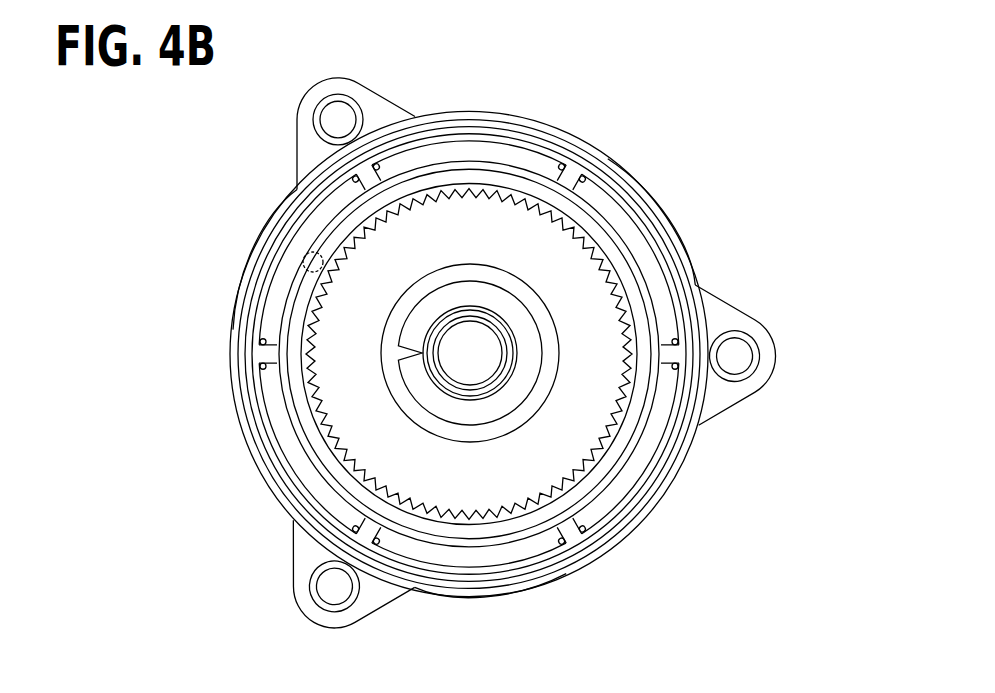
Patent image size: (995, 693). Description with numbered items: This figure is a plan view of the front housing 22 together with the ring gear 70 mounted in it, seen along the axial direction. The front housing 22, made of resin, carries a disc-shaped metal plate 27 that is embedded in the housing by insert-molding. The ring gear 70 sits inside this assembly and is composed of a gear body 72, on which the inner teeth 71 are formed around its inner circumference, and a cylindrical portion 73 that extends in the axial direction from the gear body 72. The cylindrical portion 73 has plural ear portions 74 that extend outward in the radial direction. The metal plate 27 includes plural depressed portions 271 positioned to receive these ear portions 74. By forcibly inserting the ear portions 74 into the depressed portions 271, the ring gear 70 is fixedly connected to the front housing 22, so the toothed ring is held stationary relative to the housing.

The front housing 22 is at (666, 214).
The metal plate 27 is at (451, 157).
The ring gear 70 is at (514, 160).
The inner teeth 71 is at (606, 282).
The gear body 72 is at (623, 440).
The cylindrical portion 73 is at (613, 488).
The ear portions 74 is at (340, 182).
The depressed portions 271 is at (383, 175).